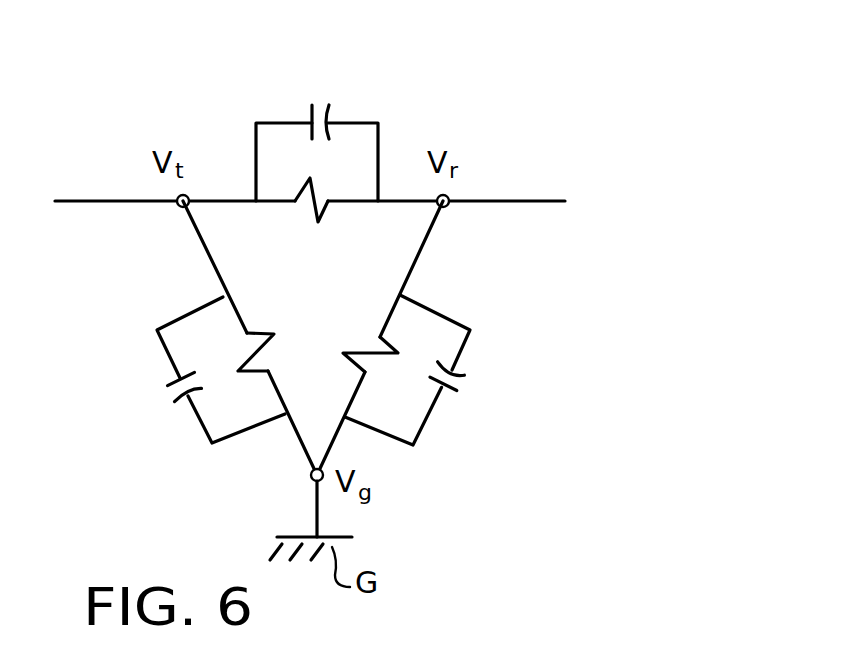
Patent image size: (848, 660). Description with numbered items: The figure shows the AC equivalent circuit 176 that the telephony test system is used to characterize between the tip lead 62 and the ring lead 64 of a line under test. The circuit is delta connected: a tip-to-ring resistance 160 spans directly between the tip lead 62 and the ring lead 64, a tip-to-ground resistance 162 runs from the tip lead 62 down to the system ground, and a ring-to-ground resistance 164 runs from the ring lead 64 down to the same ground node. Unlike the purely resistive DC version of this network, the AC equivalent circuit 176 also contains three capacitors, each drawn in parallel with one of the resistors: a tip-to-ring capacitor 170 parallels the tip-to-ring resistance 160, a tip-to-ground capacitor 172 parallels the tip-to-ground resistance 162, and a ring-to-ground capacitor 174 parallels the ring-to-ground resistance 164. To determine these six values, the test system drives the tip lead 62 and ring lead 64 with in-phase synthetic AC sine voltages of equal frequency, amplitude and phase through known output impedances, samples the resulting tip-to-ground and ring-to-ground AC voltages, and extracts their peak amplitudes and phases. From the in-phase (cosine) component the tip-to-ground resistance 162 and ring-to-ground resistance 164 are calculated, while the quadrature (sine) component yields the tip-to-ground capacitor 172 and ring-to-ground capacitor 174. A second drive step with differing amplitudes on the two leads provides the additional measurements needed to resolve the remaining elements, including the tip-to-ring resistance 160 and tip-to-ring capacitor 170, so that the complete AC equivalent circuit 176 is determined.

The tip lead 62 is at (93, 203).
The ring lead 64 is at (540, 203).
The tip-to-ring resistance 160 is at (313, 214).
The tip-to-ground resistance 162 is at (247, 356).
The ring-to-ground resistance 164 is at (388, 340).
The tip-to-ring capacitor 170 is at (329, 113).
The tip-to-ground capacitor 172 is at (183, 402).
The ring-to-ground capacitor 174 is at (458, 376).
The AC equivalent circuit 176 is at (600, 513).